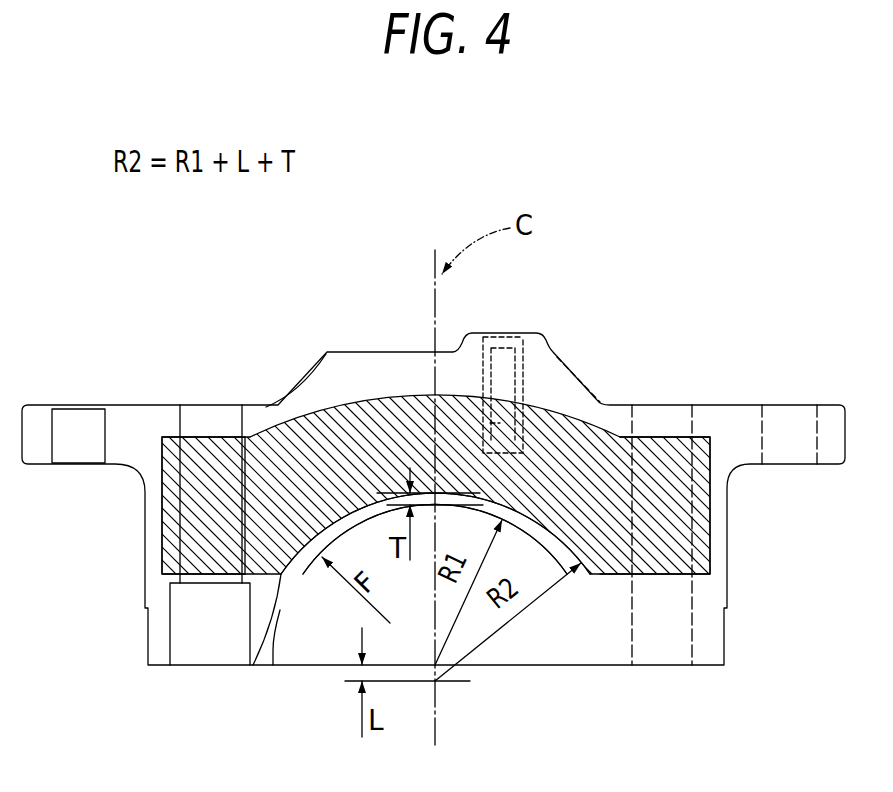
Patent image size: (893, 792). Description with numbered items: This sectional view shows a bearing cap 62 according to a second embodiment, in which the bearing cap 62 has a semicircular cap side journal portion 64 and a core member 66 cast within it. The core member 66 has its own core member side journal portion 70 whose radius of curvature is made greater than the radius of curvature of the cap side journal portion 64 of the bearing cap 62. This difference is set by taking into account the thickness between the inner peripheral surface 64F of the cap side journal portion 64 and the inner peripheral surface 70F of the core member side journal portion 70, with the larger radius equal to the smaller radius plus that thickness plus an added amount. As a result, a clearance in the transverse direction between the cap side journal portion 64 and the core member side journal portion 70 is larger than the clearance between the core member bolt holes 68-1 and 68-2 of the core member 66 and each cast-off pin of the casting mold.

The bearing cap 62 is at (704, 337).
The cap side journal portion 64 is at (300, 570).
The inner peripheral surface 64F is at (316, 555).
The core member 66 is at (382, 393).
The core member bolt hole 68-1 is at (188, 513).
The core member bolt hole 68-2 is at (663, 540).
The core member side journal portion 70 is at (330, 508).
The inner peripheral surface 70F is at (295, 533).